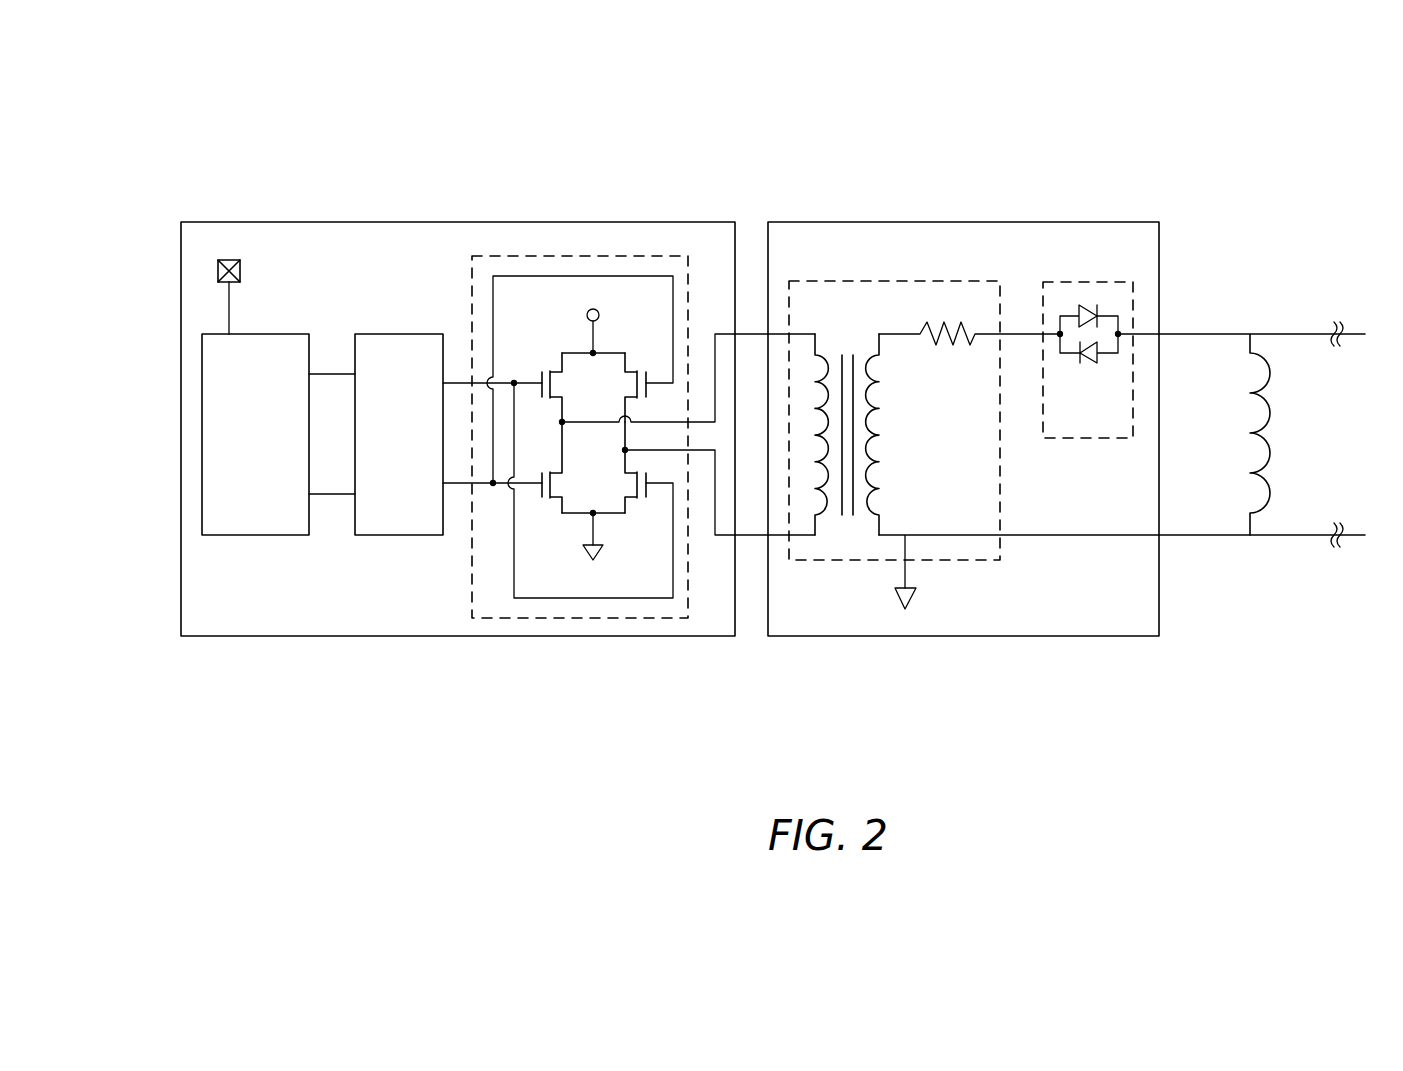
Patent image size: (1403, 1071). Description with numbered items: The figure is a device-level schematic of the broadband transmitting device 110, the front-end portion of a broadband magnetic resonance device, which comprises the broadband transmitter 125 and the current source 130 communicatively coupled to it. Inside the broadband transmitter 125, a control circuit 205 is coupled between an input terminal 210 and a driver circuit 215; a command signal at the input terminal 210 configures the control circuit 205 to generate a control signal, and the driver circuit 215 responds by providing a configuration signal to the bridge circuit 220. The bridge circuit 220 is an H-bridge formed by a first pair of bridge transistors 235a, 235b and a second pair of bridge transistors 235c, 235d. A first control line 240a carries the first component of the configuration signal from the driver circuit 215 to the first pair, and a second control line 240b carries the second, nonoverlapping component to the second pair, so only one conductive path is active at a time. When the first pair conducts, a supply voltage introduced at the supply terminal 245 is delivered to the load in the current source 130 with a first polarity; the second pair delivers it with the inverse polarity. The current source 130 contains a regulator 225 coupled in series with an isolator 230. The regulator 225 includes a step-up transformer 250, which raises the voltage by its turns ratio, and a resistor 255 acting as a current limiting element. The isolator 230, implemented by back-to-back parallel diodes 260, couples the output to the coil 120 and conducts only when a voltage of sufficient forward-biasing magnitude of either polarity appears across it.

The broadband transmitting device 110 is at (264, 64).
The coil 120 is at (1256, 350).
The broadband transmitter 125 is at (673, 222).
The current source 130 is at (1011, 222).
The control circuit 205 is at (275, 334).
The input terminal 210 is at (240, 262).
The driver circuit 215 is at (406, 334).
The bridge circuit 220 is at (471, 273).
The regulator 225 is at (894, 398).
The isolator 230 is at (1083, 282).
The bridge transistor of first pair 235a is at (558, 371).
The bridge transistor of first pair 235b is at (627, 498).
The bridge transistor of second pair 235c is at (558, 498).
The bridge transistor of second pair 235d is at (628, 371).
The first control line 240a is at (670, 590).
The second control line 240b is at (670, 281).
The supply terminal 245 is at (586, 311).
The step-up transformer 250 is at (880, 462).
The resistor 255 is at (935, 345).
The back-to-back parallel diodes 260 is at (1092, 365).